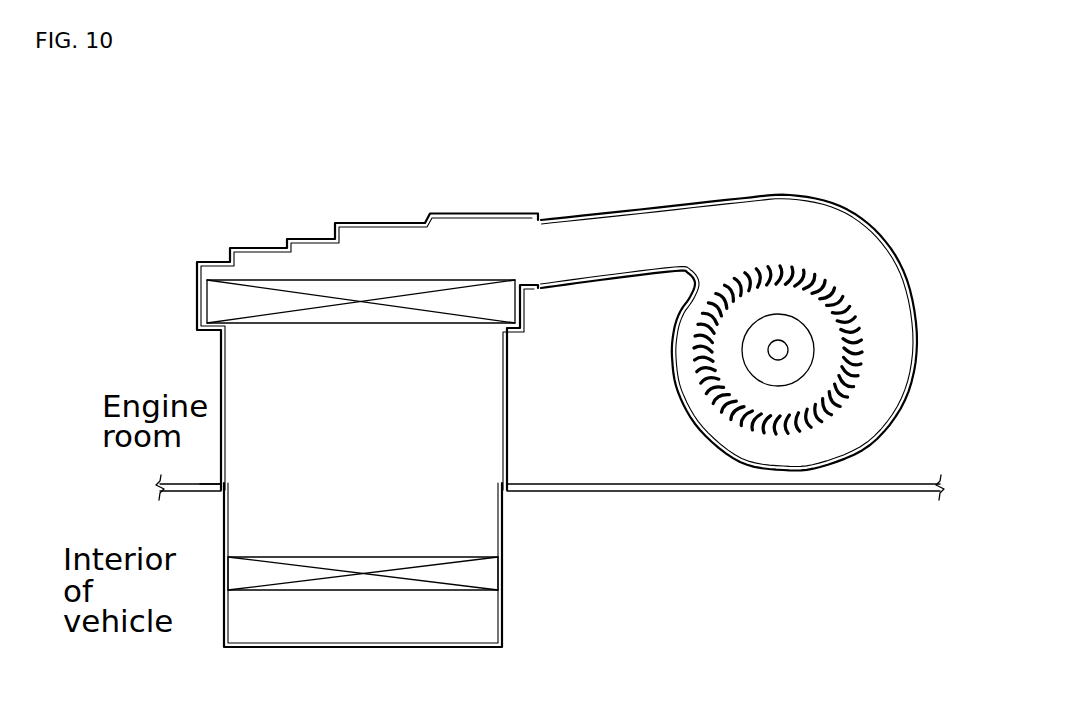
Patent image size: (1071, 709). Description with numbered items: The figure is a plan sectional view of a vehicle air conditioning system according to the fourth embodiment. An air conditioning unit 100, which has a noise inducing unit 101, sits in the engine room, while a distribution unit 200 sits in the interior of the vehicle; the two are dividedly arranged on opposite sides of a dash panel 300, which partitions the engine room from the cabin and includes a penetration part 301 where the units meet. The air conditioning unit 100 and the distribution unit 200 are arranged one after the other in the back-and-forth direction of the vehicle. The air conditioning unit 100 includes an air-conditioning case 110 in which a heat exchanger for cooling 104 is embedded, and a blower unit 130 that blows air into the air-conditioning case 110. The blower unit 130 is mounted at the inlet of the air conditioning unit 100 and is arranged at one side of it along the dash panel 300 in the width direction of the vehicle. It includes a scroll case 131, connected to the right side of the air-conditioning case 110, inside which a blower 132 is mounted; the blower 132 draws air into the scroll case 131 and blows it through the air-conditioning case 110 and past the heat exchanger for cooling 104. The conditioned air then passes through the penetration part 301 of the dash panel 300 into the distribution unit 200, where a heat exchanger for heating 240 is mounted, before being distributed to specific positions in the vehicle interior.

The air conditioning unit 100 is at (236, 228).
The noise inducing unit 101 is at (103, 322).
The heat exchanger for cooling 104 is at (212, 313).
The air-conditioning case 110 is at (197, 303).
The blower unit 130 is at (870, 212).
The scroll case 131 is at (903, 407).
The blower 132 is at (693, 355).
The distribution unit 200 is at (517, 533).
The heat exchanger for heating 240 is at (487, 577).
The dash panel 300 is at (158, 487).
The penetration part 301 is at (215, 489).